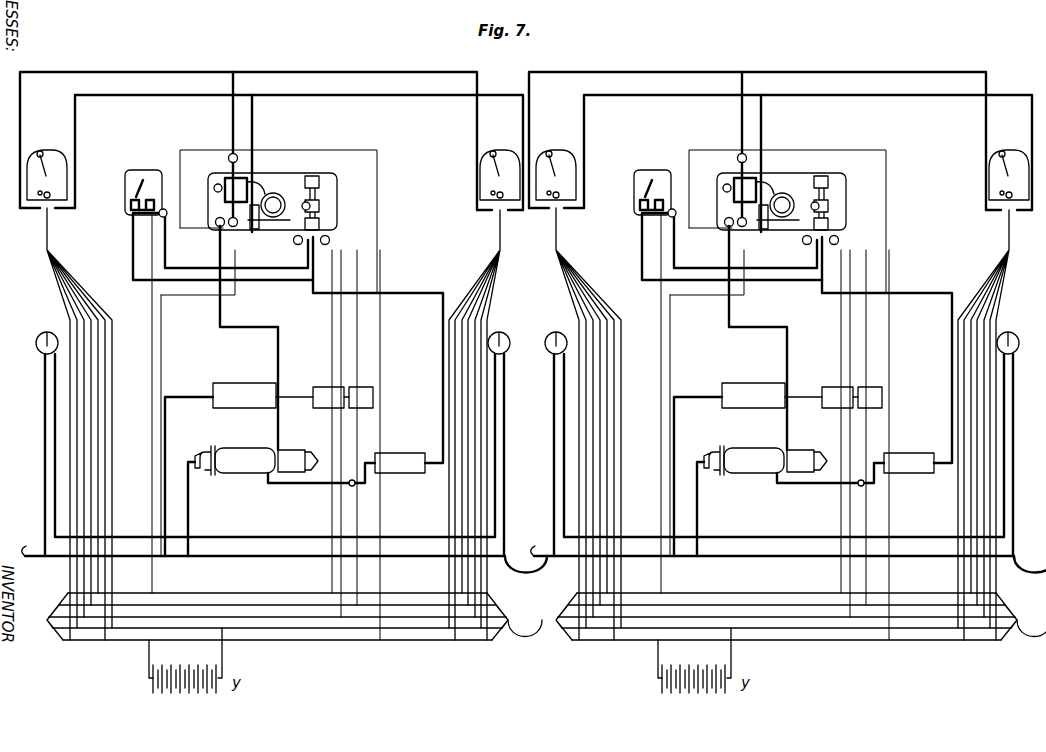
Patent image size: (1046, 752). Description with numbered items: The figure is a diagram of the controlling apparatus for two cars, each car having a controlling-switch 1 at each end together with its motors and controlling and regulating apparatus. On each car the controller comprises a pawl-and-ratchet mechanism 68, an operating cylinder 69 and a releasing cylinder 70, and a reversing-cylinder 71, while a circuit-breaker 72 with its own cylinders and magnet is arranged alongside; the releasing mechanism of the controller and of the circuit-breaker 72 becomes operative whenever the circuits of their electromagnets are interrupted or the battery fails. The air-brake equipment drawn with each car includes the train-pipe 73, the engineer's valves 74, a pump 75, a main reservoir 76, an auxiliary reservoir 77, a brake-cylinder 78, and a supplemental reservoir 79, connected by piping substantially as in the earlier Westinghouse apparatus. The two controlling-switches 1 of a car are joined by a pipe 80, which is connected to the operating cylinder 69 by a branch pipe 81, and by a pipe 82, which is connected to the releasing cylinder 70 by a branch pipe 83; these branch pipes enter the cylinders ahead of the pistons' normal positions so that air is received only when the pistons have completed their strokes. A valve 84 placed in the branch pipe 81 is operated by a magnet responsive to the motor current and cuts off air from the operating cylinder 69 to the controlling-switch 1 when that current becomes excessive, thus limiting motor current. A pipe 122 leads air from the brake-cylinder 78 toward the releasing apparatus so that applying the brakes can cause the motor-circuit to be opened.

The controlling-switch 1 is at (528, 168).
The controller pawl-and-ratchet mechanism 68 is at (535, 196).
The operating cylinder 69 is at (527, 177).
The releasing cylinder 70 is at (515, 234).
The reversing-cylinder 71 is at (570, 210).
The circuit-breaker 72 is at (400, 184).
The train-pipe 73 is at (517, 561).
The engineer's valve 74 is at (525, 343).
The pump 75 is at (595, 387).
The main reservoir 76 is at (499, 395).
The auxiliary reservoir 77 is at (489, 460).
The brake-cylinder 78 is at (552, 461).
The supplemental reservoir 79 is at (654, 463).
The pipe 80 is at (553, 152).
The branch pipe 81 is at (480, 147).
The pipe 82 is at (503, 130).
The branch pipe 83 is at (521, 163).
The valve 84 is at (468, 143).
The pipe 122 is at (503, 338).